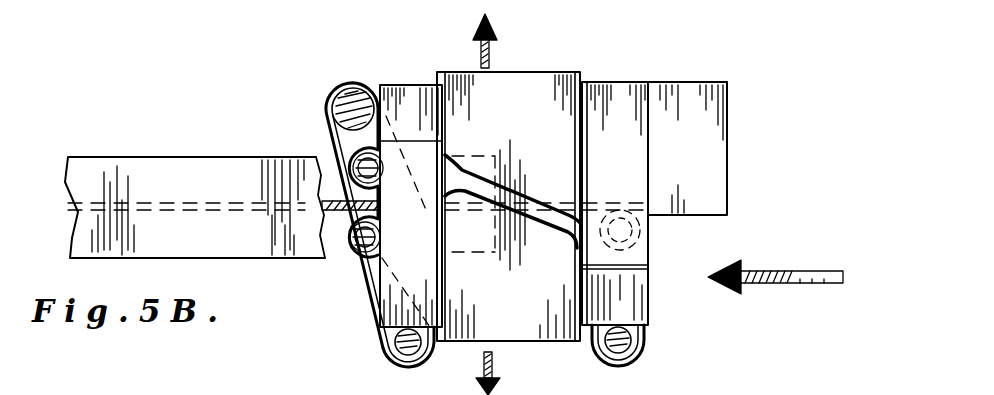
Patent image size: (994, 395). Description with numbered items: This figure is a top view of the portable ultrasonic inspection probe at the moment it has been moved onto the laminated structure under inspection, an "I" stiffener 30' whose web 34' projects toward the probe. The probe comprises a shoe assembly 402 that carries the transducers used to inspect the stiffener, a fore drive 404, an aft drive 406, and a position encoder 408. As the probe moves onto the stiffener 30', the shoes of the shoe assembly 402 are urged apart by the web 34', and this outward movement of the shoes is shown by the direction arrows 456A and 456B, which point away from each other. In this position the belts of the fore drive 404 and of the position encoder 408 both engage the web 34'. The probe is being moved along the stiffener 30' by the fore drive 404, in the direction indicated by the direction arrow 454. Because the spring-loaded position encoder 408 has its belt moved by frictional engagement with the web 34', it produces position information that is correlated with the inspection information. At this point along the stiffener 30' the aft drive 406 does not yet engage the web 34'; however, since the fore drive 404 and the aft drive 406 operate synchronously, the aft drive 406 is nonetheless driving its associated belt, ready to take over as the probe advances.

The "I" stiffener 30' is at (195, 179).
The web 34' is at (321, 228).
The shoe assembly 402 is at (595, 77).
The fore drive 404 is at (368, 346).
The aft drive 406 is at (659, 338).
The position encoder 408 is at (353, 82).
The direction arrow 454 is at (784, 272).
The direction arrow 456A is at (495, 49).
The direction arrow 456B is at (498, 378).